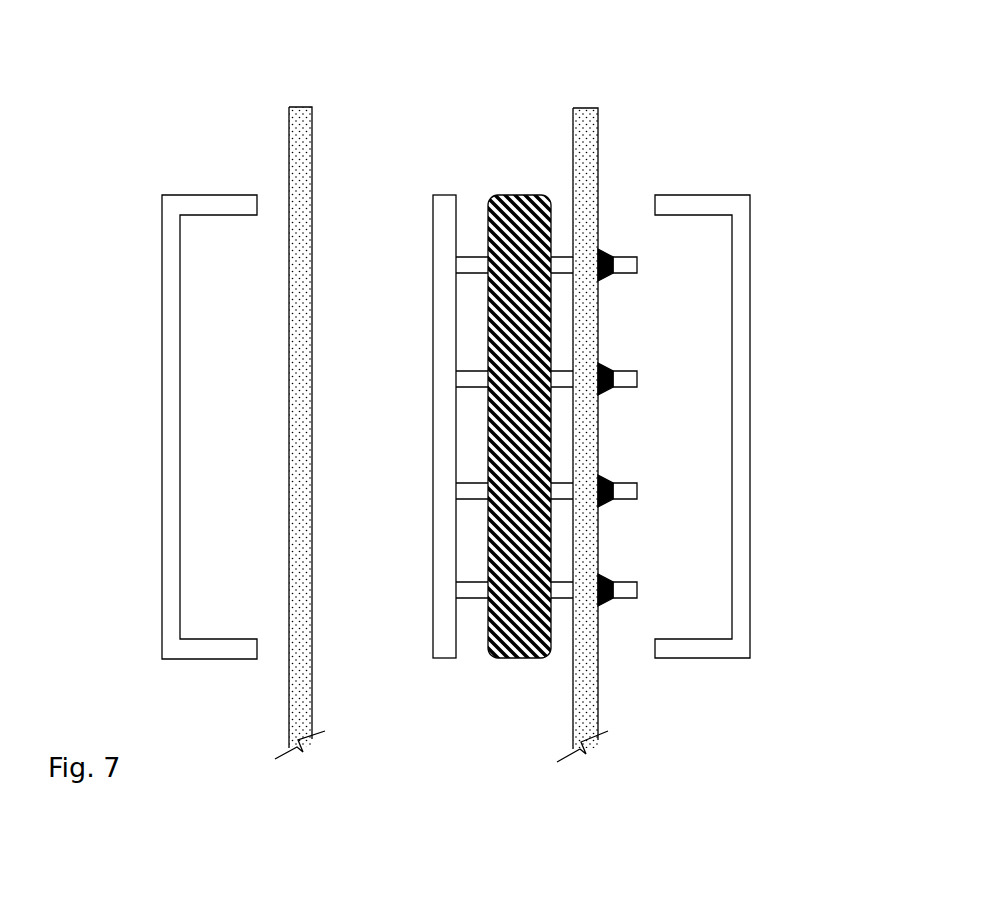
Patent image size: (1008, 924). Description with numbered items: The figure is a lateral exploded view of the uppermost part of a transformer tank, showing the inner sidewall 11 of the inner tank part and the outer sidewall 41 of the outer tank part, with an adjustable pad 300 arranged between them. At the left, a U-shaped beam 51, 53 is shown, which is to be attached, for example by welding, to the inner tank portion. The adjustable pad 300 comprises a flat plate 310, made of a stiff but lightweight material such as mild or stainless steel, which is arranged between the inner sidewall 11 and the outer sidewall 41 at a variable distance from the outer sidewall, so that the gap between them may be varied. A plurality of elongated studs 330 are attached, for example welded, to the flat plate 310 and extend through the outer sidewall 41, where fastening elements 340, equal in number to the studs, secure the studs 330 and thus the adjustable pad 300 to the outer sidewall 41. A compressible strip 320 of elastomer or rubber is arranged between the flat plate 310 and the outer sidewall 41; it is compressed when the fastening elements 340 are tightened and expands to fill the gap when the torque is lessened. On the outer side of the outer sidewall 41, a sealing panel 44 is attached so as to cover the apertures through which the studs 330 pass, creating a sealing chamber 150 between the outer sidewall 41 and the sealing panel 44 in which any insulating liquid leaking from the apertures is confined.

The inner sidewall 11 is at (302, 120).
The outer sidewall 41 is at (583, 115).
The sealing panel 44 is at (725, 652).
The U-shaped beam 51 is at (152, 397).
The U-shaped beam 53 is at (173, 205).
The sealing chamber 150 is at (700, 332).
The adjustable pad 300 is at (544, 88).
The flat plate 310 is at (445, 207).
The compressible strip 320 is at (512, 207).
The elongated studs 330 is at (622, 265).
The fastening elements 340 is at (602, 603).